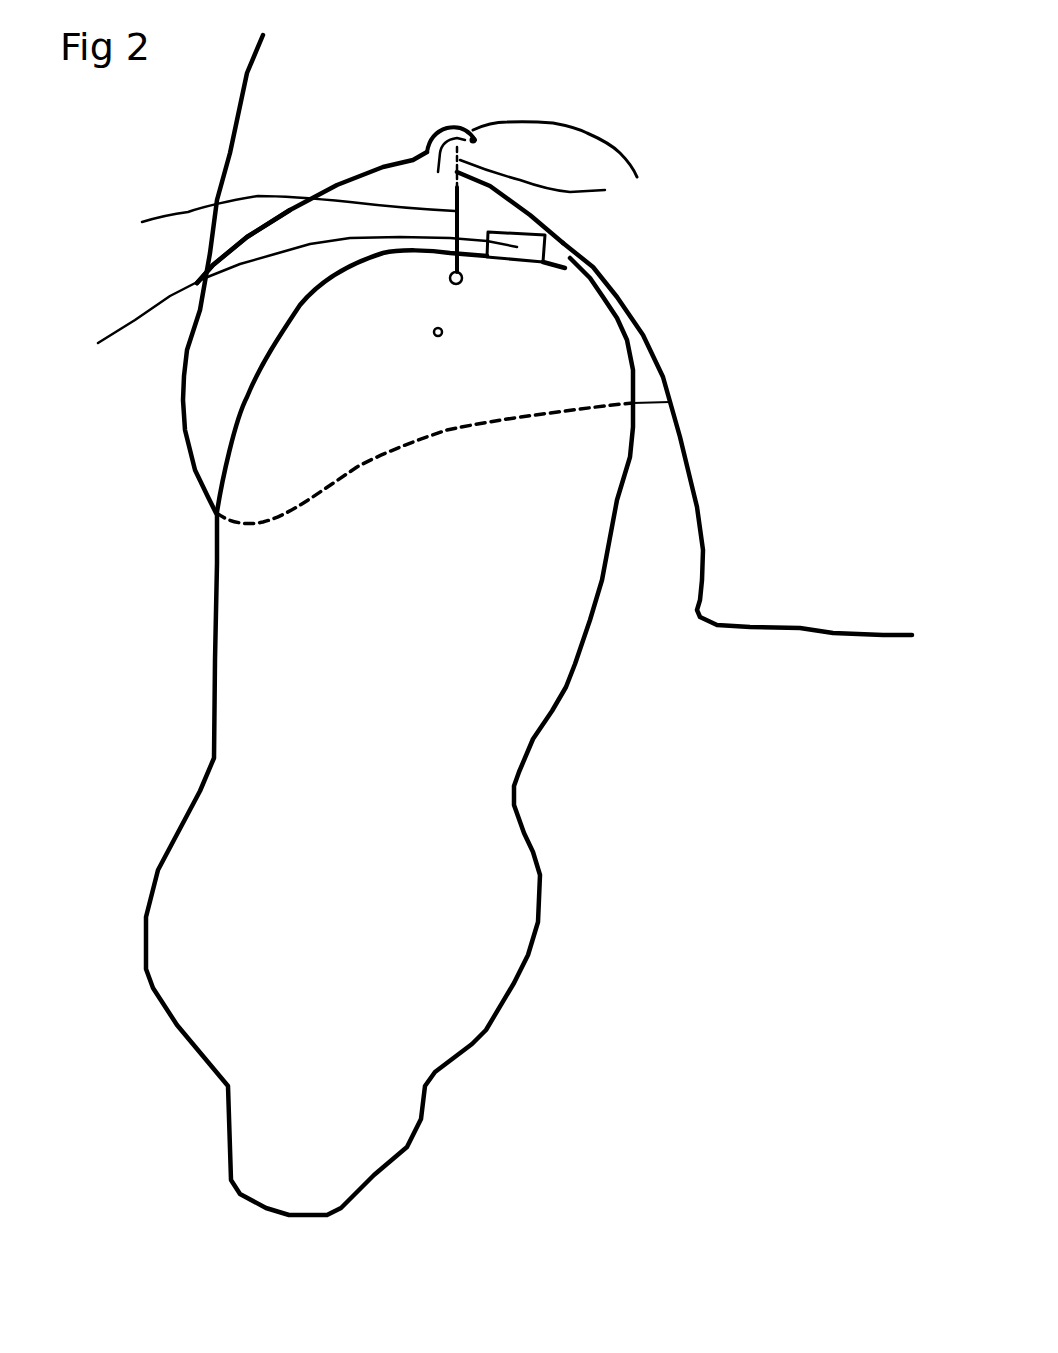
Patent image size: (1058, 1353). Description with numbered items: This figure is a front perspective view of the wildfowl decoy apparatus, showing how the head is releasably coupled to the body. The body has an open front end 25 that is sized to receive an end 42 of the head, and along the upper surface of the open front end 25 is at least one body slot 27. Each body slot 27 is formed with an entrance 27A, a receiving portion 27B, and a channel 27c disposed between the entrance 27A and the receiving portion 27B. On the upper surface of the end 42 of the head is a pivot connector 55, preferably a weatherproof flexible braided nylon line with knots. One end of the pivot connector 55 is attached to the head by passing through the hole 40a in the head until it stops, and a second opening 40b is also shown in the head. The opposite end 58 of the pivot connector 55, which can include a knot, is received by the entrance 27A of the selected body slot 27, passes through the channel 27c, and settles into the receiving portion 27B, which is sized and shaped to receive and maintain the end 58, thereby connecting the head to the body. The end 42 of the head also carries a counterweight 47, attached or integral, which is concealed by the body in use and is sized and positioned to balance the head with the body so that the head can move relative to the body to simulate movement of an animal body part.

The open front end 25 is at (700, 537).
The body slot 27 is at (500, 120).
The entrance 27A is at (413, 160).
The receiving portion 27B is at (476, 141).
The channel 27c is at (433, 143).
The hole 40a is at (462, 278).
The second opening 40b is at (443, 331).
The end of the head 42 is at (253, 577).
The counterweight 47 is at (304, 298).
The pivot connector 55 is at (271, 221).
The end of the connector 58 is at (566, 192).